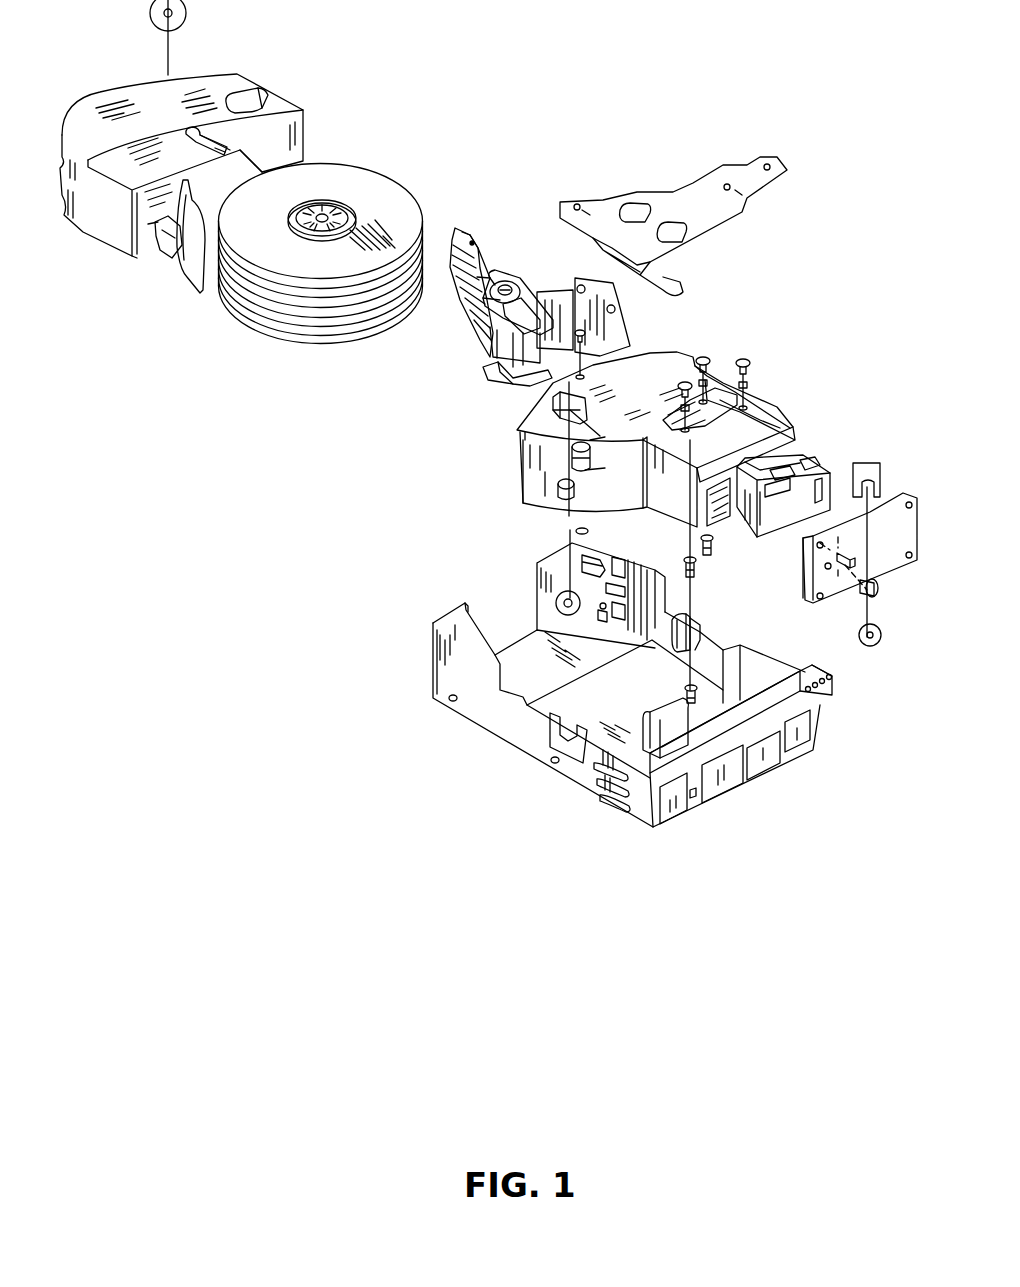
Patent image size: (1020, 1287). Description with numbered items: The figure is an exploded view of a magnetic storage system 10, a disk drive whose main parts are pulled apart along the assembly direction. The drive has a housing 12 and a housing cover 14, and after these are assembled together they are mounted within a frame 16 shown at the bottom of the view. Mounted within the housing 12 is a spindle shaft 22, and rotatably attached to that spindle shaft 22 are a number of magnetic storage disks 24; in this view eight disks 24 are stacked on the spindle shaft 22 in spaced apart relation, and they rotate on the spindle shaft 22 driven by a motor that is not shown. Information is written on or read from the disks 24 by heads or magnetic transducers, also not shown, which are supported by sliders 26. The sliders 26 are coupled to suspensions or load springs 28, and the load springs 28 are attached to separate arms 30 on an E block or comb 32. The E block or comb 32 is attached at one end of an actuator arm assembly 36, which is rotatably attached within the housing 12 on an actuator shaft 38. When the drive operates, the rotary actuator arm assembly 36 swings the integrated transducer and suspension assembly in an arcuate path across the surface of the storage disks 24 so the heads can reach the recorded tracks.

The magnetic storage system 10 is at (454, 118).
The housing 12 is at (668, 368).
The housing cover 14 is at (106, 216).
The frame 16 is at (500, 720).
The spindle shaft 22 is at (323, 214).
The magnetic storage disks 24 is at (255, 297).
The sliders 26 is at (456, 224).
The load springs 28 is at (464, 240).
The arms 30 is at (488, 262).
The E block 32 is at (456, 290).
The actuator arm assembly 36 is at (478, 323).
The actuator shaft 38 is at (507, 285).